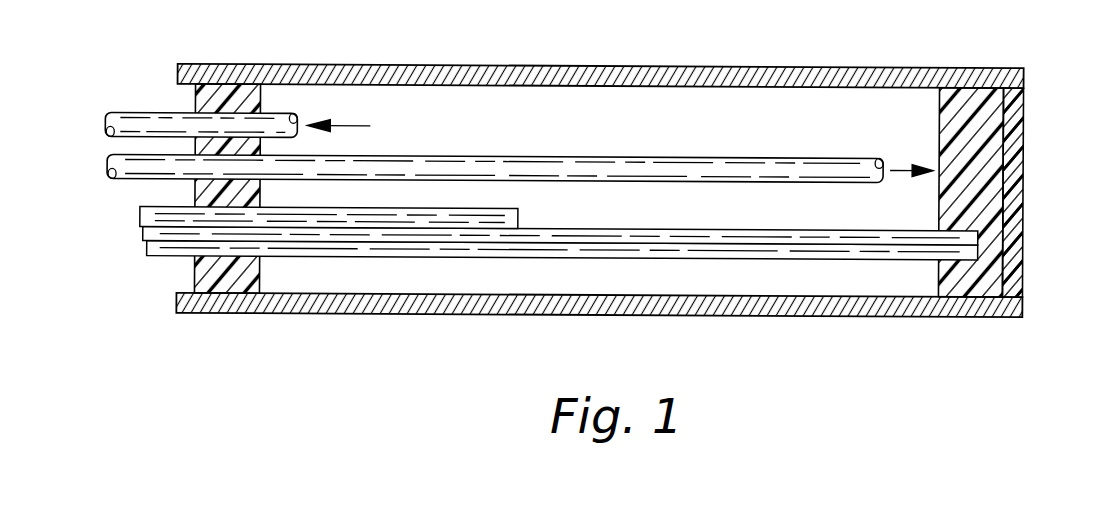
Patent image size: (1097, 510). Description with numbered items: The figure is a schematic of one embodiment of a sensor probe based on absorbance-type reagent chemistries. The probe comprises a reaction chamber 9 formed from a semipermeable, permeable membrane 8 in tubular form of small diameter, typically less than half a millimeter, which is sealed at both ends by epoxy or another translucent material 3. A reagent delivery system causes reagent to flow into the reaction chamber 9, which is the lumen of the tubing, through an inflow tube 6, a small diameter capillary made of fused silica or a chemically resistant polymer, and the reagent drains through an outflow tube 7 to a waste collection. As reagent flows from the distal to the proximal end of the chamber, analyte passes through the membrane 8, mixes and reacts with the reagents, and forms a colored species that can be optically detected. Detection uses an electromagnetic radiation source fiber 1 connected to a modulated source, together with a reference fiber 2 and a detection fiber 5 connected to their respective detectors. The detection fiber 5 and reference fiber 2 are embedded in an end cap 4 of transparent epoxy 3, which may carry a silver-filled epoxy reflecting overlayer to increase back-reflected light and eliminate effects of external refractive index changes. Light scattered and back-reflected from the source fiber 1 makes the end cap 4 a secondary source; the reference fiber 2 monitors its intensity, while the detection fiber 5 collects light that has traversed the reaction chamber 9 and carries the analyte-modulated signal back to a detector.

The electromagnetic radiation source fiber 1 is at (140, 214).
The reference fiber 2 is at (160, 256).
The translucent material 3 is at (222, 88).
The end cap 4 is at (1015, 143).
The detection fiber 5 is at (145, 234).
The inflow tube 6 is at (415, 158).
The outflow tube 7 is at (140, 115).
The permeable membrane 8 is at (500, 66).
The reaction chamber 9 is at (661, 108).